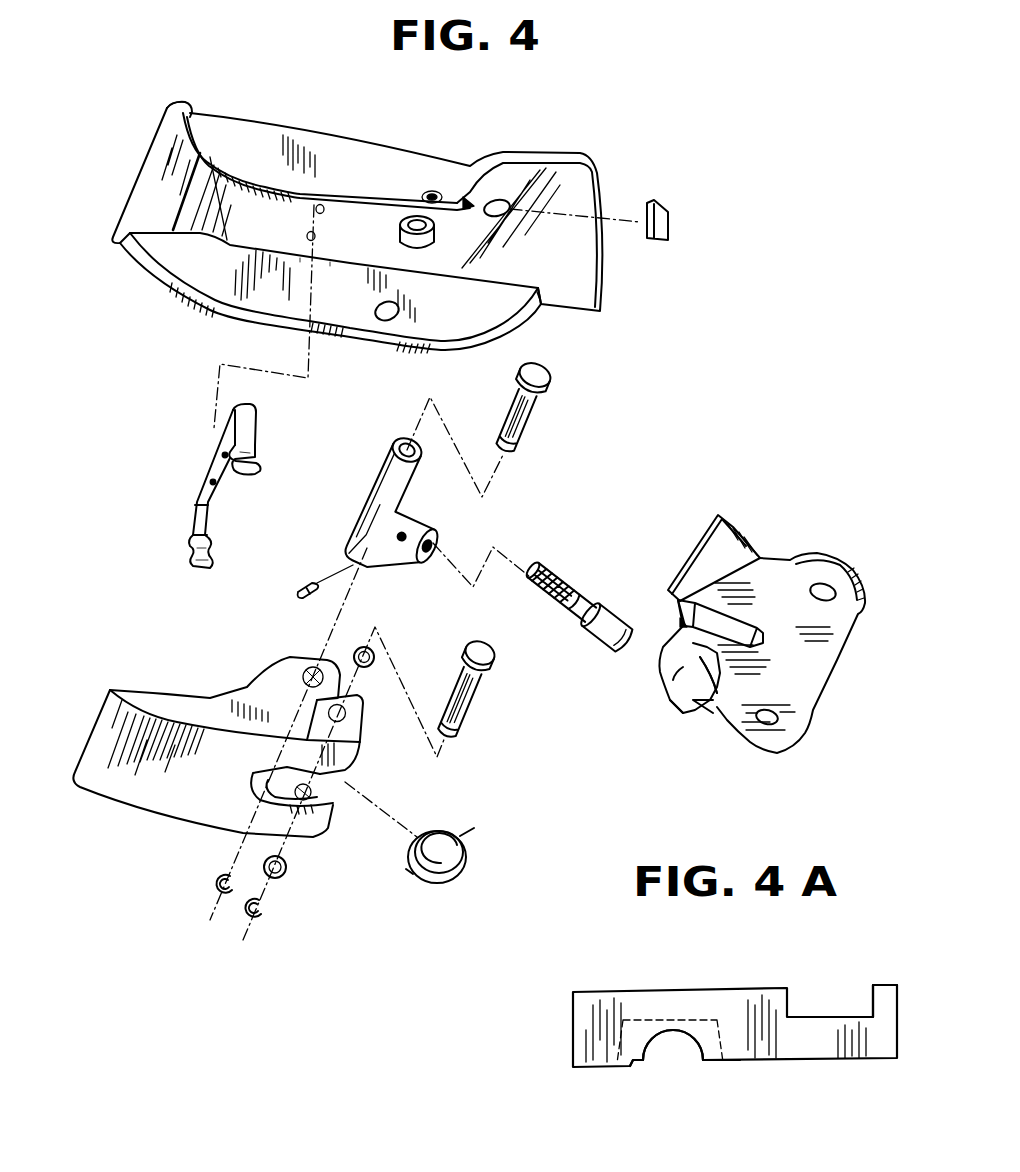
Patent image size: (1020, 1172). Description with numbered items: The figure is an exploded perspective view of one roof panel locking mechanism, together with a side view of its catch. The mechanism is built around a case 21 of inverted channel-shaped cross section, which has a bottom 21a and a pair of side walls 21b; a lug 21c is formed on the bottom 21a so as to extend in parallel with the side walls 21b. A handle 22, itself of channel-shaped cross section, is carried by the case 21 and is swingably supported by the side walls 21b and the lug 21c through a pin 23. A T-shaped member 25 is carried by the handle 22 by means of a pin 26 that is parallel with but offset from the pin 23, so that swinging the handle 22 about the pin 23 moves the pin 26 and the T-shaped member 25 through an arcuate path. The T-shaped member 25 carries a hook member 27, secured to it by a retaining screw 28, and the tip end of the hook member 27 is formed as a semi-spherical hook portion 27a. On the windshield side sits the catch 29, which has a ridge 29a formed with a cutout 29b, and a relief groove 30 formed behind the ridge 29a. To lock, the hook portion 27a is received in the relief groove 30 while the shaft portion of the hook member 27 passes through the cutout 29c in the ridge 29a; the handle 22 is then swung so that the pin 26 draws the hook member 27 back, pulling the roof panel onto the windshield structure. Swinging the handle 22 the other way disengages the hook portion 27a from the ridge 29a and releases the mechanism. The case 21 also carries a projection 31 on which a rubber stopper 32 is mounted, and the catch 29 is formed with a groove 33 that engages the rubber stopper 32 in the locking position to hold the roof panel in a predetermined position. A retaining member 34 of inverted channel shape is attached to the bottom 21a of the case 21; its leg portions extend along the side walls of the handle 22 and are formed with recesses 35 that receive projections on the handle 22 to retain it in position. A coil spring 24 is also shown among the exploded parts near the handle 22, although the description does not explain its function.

In FIG. 4, the case 21 is at (367, 163).
In FIG. 4, the bottom 21a is at (260, 220).
In FIG. 4, the side walls 21b is at (303, 157).
In FIG. 4, the lug 21c is at (430, 224).
In FIG. 4, the handle 22 is at (205, 796).
In FIG. 4, the pin 23 is at (478, 700).
In FIG. 4, the torsion spring 24 is at (467, 862).
In FIG. 4, the T-shaped member 25 is at (390, 472).
In FIG. 4, the pin 26 is at (528, 422).
In FIG. 4, the hook member 27 is at (583, 617).
In FIG. 4, the hook portion 27a is at (612, 657).
In FIG. 4, the retaining screw 28 is at (297, 590).
In FIG. 4, the catch 29 is at (813, 648).
In FIG. 4A, the catch 29 is at (573, 1022).
In FIG. 4, the ridge 29a is at (667, 707).
In FIG. 4A, the ridge 29a is at (624, 1067).
In FIG. 4, the cutout 29b is at (693, 653).
In FIG. 4A, the cutout 29b is at (650, 1052).
In FIG. 4A, the cutout 29c is at (675, 1053).
In FIG. 4, the relief groove 30 is at (698, 660).
In FIG. 4A, the relief groove 30 is at (707, 1020).
In FIG. 4, the projection 31 is at (516, 170).
In FIG. 4, the rubber stopper 32 is at (657, 242).
In FIG. 4, the groove 33 is at (697, 543).
In FIG. 4A, the groove 33 is at (827, 1017).
In FIG. 4, the retaining member 34 is at (197, 455).
In FIG. 4, the recesses 35 is at (262, 457).